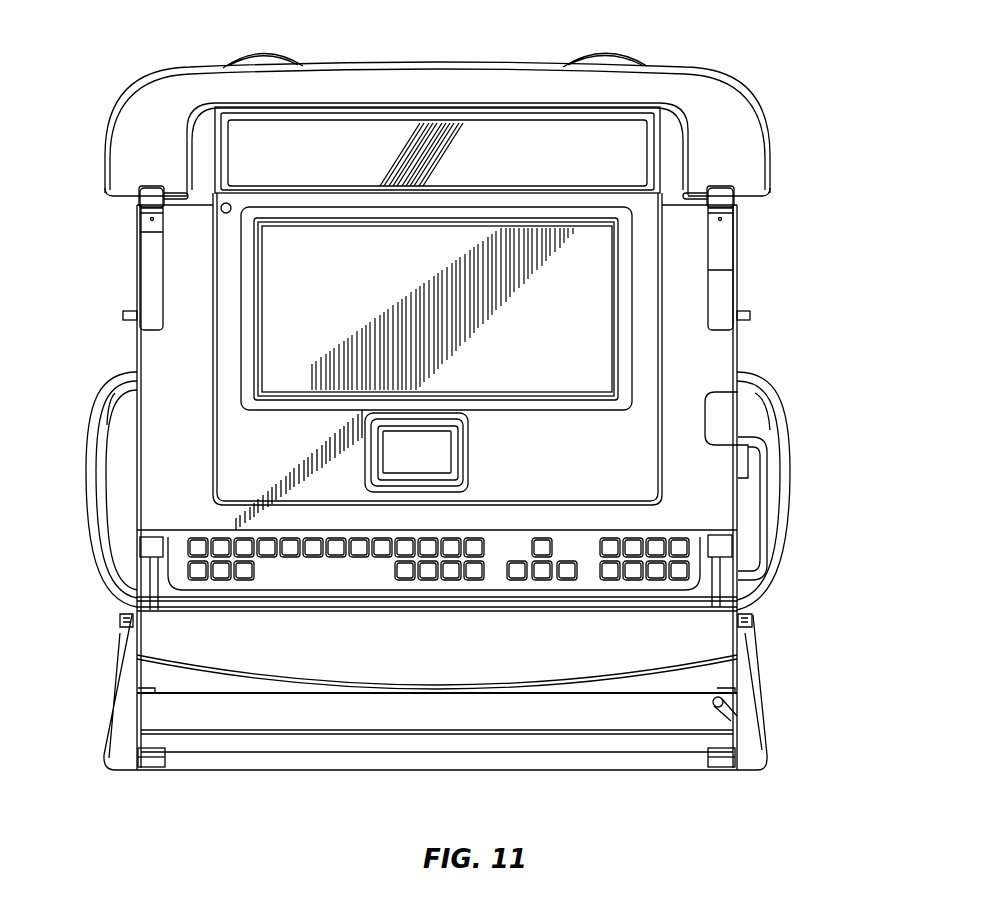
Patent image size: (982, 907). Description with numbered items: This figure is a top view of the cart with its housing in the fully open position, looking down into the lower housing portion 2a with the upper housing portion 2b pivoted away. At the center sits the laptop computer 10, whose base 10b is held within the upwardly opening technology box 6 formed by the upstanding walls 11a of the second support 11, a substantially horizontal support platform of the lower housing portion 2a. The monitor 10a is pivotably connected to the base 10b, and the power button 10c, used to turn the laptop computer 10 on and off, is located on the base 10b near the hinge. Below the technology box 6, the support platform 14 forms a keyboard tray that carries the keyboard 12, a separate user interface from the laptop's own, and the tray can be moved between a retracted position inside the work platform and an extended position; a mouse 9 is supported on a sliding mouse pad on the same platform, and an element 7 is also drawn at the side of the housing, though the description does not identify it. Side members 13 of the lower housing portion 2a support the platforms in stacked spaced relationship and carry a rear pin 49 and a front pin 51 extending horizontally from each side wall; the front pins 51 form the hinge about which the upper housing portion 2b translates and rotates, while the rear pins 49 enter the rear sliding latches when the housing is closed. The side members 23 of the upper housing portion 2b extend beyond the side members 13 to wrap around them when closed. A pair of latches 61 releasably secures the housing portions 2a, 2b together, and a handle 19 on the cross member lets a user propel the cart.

The handle 19 is at (375, 73).
The monitor 10a is at (487, 142).
The lower housing portion 2a is at (768, 190).
The upper housing portion 2b is at (766, 737).
The latch 61 is at (158, 194).
The side member 13 is at (134, 345).
The rear pin 49 is at (123, 315).
The power button 10c is at (222, 213).
The second support 11 is at (183, 358).
The laptop computer 10 is at (202, 428).
The base 10b is at (643, 318).
The technology box 6 is at (126, 463).
The right side pod 7 is at (790, 500).
The mouse 9 is at (760, 527).
The upstanding walls 11a is at (135, 492).
The keyboard 12 is at (660, 557).
The support platform 14 is at (515, 647).
The front pin 51 is at (120, 622).
The side member 23 is at (122, 664).